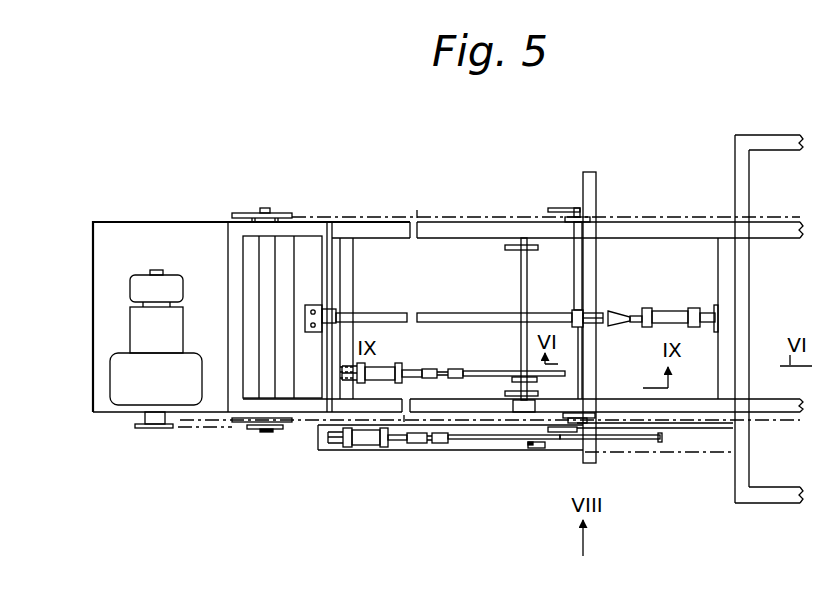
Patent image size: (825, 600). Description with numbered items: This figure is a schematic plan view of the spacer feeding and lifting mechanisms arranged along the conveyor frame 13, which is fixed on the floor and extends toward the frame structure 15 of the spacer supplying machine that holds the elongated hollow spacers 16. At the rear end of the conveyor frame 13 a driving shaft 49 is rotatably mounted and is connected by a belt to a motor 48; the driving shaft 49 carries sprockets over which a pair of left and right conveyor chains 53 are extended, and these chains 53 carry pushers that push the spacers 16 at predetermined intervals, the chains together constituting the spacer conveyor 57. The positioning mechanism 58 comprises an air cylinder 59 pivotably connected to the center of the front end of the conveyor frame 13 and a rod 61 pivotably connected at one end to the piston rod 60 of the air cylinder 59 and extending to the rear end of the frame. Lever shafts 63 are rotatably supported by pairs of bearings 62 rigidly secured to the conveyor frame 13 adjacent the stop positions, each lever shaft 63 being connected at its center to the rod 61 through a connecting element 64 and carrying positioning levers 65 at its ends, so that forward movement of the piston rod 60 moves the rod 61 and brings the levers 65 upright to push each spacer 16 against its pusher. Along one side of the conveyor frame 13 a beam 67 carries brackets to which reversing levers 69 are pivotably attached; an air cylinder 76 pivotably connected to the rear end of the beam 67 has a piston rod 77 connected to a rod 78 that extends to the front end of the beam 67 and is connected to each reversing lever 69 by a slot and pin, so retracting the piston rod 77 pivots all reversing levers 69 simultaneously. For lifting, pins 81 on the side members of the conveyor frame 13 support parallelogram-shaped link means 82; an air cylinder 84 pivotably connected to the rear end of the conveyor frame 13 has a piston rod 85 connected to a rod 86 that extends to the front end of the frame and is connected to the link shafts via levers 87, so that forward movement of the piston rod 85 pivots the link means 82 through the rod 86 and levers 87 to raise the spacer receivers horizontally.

The conveyor frame 13 is at (672, 408).
The frame structure 15 is at (729, 189).
The spacer 16 is at (597, 194).
The motor 48 is at (143, 323).
The driving shaft 49 is at (266, 208).
The conveyor chain 53 is at (383, 215).
The spacer conveyor 57 is at (473, 211).
The positioning mechanism 58 is at (616, 292).
The air cylinder 59 is at (680, 318).
The piston rod 60 is at (632, 318).
The rod 61 is at (428, 317).
The bearing 62 is at (568, 224).
The lever shaft 63 is at (334, 268).
The coupling block 64 is at (345, 308).
The positioning lever 65 is at (553, 208).
The beam 67 is at (625, 452).
The reversing lever 69 is at (531, 448).
The air cylinder 76 is at (366, 442).
The piston rod 77 is at (400, 444).
The rod 78 is at (465, 442).
The pin 81 is at (521, 292).
The link means 82 is at (510, 250).
The air cylinder 84 is at (383, 373).
The piston rod 85 is at (425, 369).
The rod 86 is at (490, 371).
The lever 87 is at (509, 380).